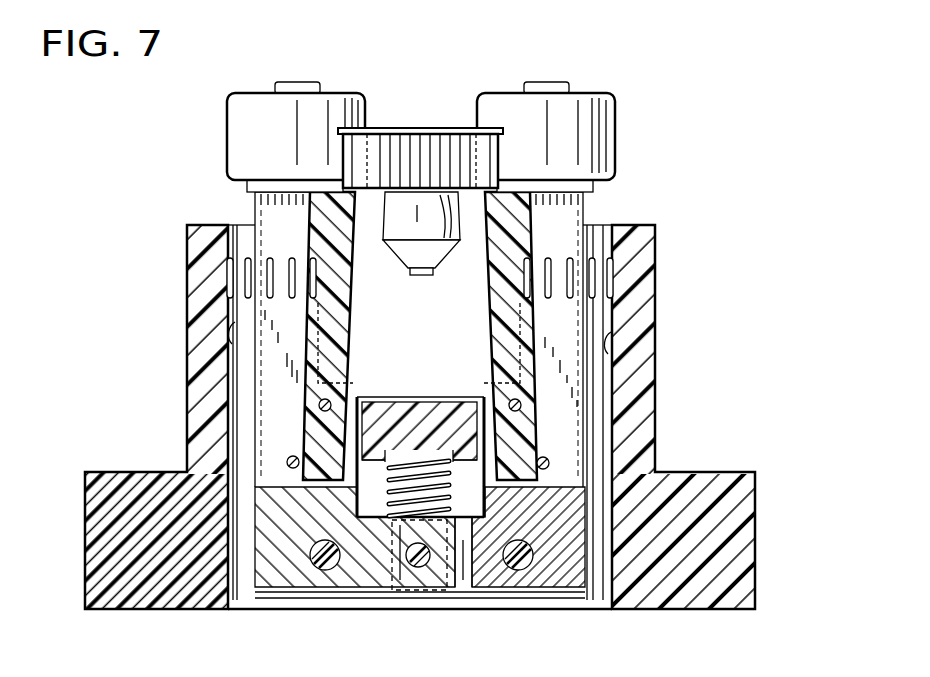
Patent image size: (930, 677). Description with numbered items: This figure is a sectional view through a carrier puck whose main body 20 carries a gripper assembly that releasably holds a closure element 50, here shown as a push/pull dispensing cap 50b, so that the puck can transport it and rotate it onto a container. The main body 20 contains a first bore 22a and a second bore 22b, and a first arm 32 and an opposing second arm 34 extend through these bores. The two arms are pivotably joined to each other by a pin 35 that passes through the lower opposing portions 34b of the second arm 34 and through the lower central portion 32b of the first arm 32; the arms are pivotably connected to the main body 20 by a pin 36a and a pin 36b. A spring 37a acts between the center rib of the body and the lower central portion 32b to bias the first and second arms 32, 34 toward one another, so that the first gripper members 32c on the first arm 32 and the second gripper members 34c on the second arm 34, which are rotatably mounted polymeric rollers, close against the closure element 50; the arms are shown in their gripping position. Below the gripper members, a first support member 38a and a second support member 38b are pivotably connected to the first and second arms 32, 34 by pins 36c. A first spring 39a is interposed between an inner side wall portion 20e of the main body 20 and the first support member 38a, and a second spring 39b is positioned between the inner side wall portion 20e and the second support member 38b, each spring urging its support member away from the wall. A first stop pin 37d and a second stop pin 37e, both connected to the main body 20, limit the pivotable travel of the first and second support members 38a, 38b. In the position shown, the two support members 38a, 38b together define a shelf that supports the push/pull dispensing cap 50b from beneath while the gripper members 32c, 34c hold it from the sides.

The main body 20 is at (740, 544).
The inner side wall portion 20e is at (235, 330).
The first bore 22a is at (234, 566).
The second bore 22b is at (608, 566).
The first arm 32 is at (270, 215).
The lower central portion 32b is at (434, 576).
The first gripper members 32c is at (243, 117).
The second arm 34 is at (565, 215).
The lower opposing portions 34b is at (462, 580).
The second gripper members 34c is at (608, 118).
The pin 35 is at (375, 600).
The pin 36a is at (320, 565).
The pin 36b is at (522, 565).
The pins 36c is at (337, 407).
The spring 37a is at (383, 495).
The first stop pin 37d is at (287, 462).
The second stop pin 37e is at (549, 462).
The first support member 38a is at (335, 322).
The second support member 38b is at (497, 302).
The first spring 39a is at (248, 278).
The second spring 39b is at (608, 272).
The closure element 50 is at (385, 145).
The push/pull dispensing cap 50b is at (430, 150).